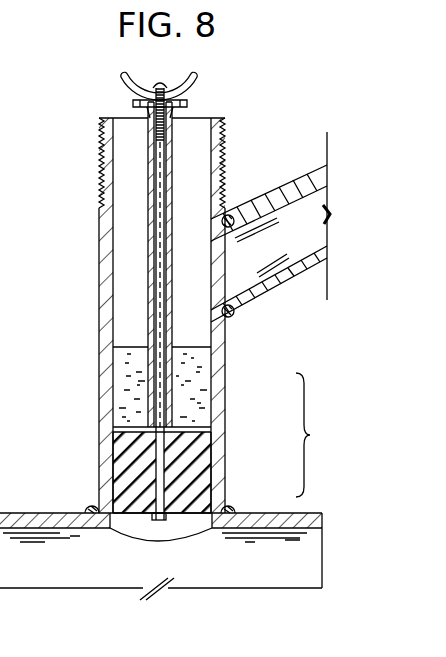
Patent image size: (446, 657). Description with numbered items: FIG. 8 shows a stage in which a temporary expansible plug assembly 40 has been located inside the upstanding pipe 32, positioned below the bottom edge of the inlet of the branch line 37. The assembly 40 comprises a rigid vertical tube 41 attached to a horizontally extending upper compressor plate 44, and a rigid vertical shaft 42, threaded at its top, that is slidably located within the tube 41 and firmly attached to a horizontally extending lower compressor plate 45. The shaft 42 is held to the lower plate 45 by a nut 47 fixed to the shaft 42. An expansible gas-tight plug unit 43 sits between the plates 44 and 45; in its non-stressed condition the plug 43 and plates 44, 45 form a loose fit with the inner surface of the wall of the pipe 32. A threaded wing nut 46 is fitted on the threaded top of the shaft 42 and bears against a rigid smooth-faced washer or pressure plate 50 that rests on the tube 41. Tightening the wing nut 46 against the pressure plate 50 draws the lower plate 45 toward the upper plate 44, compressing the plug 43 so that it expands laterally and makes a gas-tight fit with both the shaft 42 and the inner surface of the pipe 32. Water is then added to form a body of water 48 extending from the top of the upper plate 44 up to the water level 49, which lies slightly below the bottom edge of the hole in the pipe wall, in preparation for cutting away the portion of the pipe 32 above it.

The upstanding pipe 32 is at (103, 450).
The branch line 37 is at (291, 194).
The temporary expansible plug assembly 40 is at (172, 486).
The rigid vertical tube 41 is at (152, 238).
The rigid vertical shaft 42 is at (162, 180).
The expansible plug unit 43 is at (192, 458).
The upper compressor plate 44 is at (195, 430).
The lower compressor plate 45 is at (215, 505).
The threaded wing nut 46 is at (181, 88).
The nut 47 is at (147, 515).
The body of water 48 is at (130, 393).
The liquid level 49 is at (140, 347).
The washer or pressure plate 50 is at (195, 100).